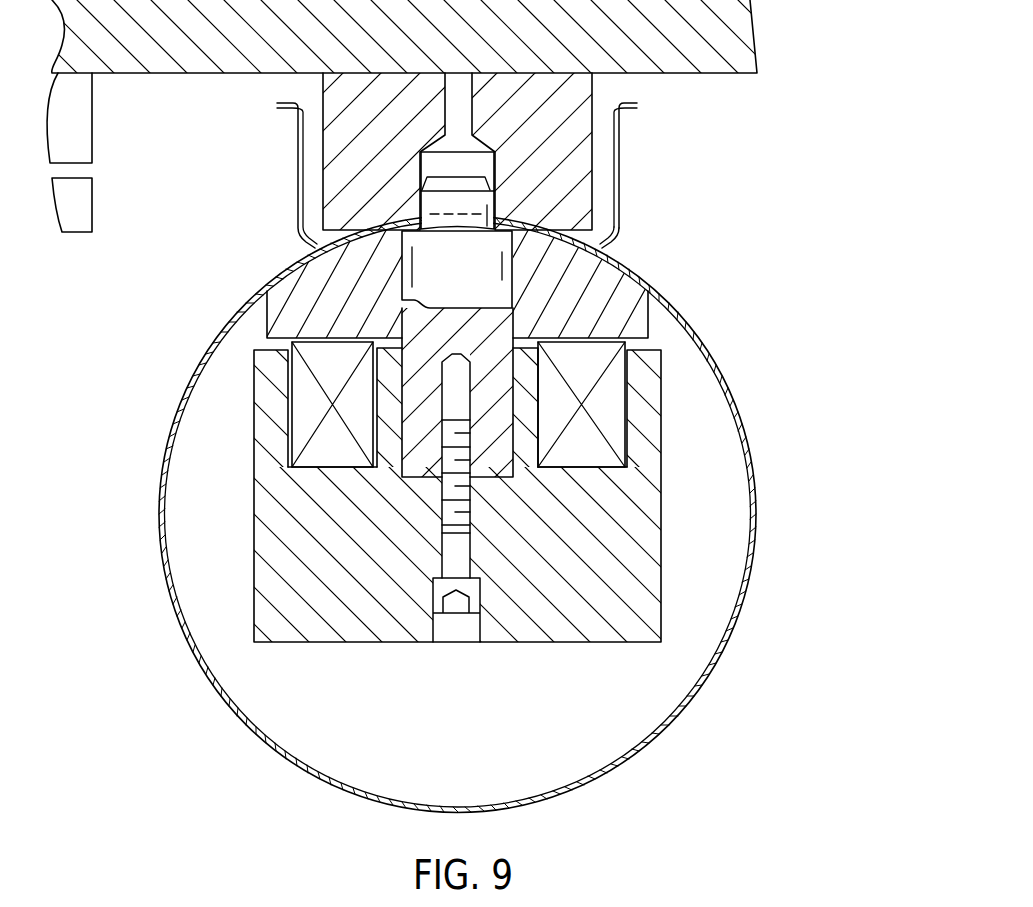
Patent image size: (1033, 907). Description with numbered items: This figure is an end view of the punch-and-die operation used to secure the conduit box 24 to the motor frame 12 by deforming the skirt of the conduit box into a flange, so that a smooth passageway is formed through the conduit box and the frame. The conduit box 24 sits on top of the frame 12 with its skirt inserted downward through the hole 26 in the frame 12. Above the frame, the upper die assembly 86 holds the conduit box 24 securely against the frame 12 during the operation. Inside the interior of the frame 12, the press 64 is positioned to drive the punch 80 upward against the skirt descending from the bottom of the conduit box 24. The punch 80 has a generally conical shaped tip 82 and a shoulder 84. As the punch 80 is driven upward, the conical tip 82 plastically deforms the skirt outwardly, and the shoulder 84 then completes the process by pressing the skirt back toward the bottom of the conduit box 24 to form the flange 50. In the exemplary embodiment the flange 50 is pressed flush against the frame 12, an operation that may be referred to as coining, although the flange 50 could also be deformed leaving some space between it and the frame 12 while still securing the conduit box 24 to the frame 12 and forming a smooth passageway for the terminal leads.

The frame 12 is at (722, 382).
The conduit box 24 is at (620, 205).
The hole 26 is at (600, 236).
The flange 50 is at (507, 217).
The press 64 is at (662, 499).
The punch 80 is at (441, 292).
The conical shaped tip 82 is at (473, 182).
The shoulder 84 is at (412, 233).
The upper die assembly 86 is at (476, 165).